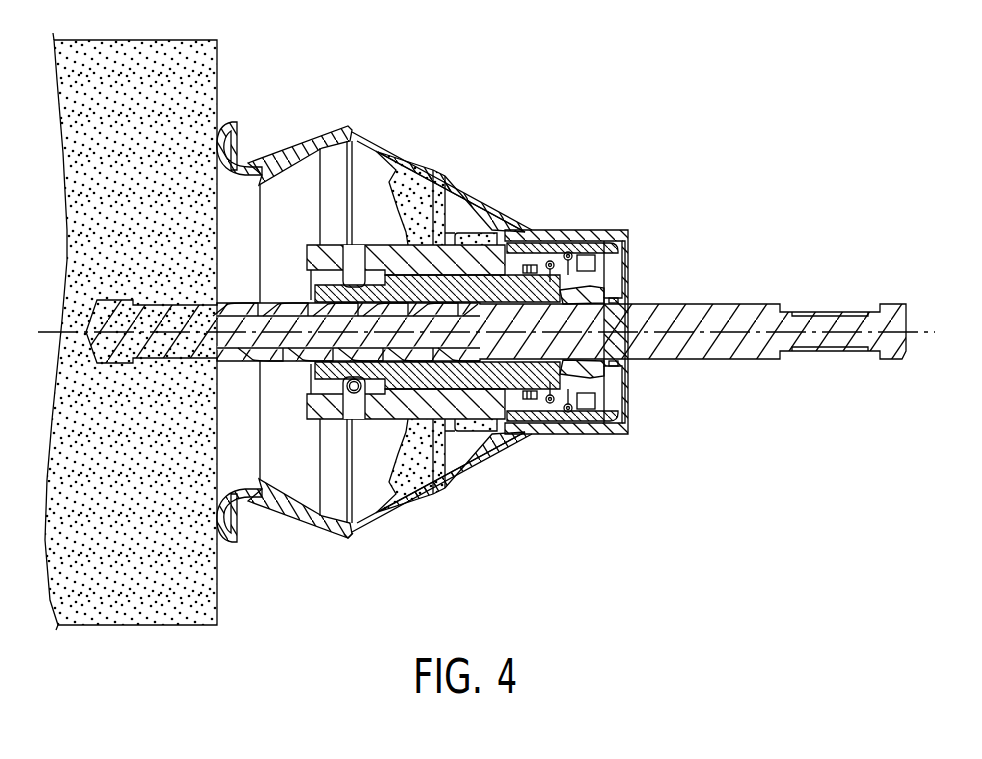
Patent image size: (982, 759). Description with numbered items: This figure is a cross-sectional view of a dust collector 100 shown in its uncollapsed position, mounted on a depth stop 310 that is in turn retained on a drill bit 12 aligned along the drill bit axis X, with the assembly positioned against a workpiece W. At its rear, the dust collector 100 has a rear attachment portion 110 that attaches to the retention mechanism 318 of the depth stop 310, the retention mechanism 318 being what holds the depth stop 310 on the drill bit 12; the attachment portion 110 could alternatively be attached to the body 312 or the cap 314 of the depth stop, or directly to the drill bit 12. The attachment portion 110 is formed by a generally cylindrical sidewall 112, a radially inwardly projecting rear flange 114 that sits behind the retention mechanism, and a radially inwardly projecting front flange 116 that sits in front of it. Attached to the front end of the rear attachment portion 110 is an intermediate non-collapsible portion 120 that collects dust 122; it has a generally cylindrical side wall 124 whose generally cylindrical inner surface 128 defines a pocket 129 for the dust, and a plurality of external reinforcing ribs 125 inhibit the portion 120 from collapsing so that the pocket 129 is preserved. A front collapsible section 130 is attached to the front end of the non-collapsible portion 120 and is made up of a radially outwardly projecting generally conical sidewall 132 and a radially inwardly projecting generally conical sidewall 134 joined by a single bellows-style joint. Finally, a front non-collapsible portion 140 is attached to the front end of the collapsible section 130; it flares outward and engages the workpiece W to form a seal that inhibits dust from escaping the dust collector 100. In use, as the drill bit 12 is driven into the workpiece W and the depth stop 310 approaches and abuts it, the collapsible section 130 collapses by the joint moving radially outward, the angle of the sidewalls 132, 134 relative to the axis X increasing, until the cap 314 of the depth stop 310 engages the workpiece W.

The drill bit 12 is at (745, 348).
The dust collector 100 is at (499, 326).
The rear attachment portion 110 is at (596, 332).
The generally cylindrical sidewall 112 is at (593, 230).
The rear flange 114 is at (624, 244).
The front flange 116 is at (508, 258).
The intermediate non-collapsible portion 120 is at (477, 458).
The dust 122 is at (406, 490).
The generally cylindrical side wall 124 is at (467, 452).
The external reinforcing ribs 125 is at (493, 438).
The generally cylindrical inner surface 128 is at (460, 230).
The pocket 129 is at (473, 238).
The front collapsible section 130 is at (374, 285).
The radially outwardly projecting generally conical sidewall 132 is at (333, 86).
The radially inwardly projecting generally conical sidewall 134 is at (309, 148).
The front non-collapsible portion 140 is at (227, 118).
The depth stop 310 is at (598, 332).
The body 312 is at (517, 385).
The cap 314 is at (358, 520).
The retention mechanism 318 is at (607, 420).
The workpiece W is at (203, 590).
The drill bit axis X is at (917, 332).